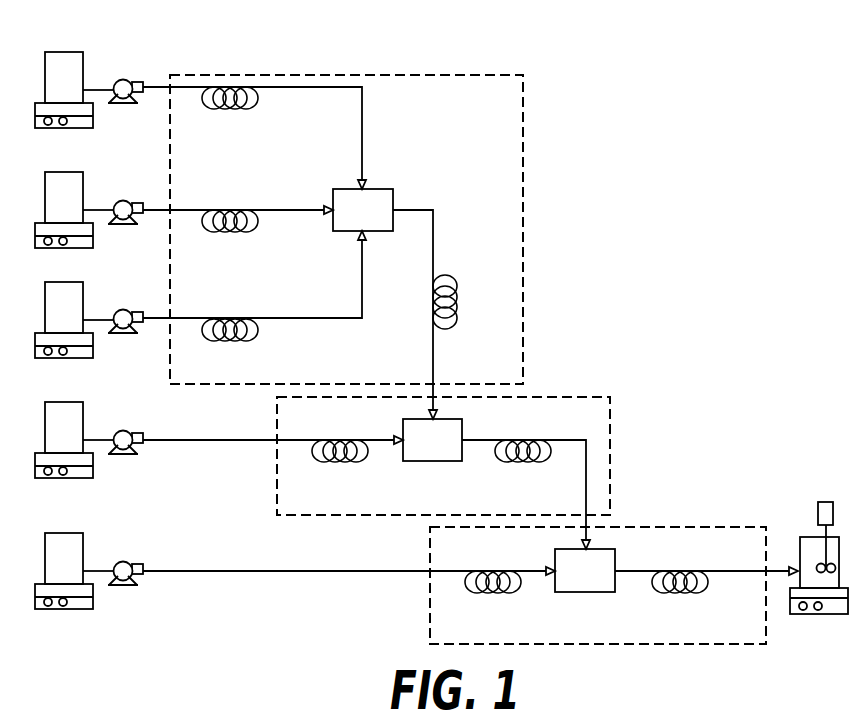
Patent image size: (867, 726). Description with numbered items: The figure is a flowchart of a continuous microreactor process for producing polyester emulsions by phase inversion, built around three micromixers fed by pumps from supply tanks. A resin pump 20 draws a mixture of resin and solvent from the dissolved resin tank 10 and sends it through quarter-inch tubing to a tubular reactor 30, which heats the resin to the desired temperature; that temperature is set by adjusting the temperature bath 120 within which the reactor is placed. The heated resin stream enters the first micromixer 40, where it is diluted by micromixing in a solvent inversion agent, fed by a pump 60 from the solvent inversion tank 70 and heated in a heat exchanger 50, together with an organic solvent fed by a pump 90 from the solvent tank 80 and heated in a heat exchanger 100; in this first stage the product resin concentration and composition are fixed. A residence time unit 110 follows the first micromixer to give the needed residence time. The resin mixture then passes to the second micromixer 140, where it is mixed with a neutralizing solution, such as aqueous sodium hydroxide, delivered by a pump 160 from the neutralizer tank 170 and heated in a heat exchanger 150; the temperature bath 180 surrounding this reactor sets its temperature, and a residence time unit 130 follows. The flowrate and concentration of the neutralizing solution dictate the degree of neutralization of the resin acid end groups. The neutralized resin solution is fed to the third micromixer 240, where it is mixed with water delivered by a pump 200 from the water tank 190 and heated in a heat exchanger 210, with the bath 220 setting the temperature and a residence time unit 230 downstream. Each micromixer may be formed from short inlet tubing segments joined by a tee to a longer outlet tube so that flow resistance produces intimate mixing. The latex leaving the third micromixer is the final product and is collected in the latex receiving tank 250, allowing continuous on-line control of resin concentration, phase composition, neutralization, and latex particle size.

The dissolved resin tank 10 is at (63, 50).
The resin pump 20 is at (123, 80).
The tubular reactor 30 is at (226, 86).
The first micromixer 40 is at (348, 232).
The heat exchanger 50 is at (228, 210).
The pump 60 is at (123, 201).
The solvent inversion tank 70 is at (63, 173).
The solvent tank 80 is at (63, 282).
The pump 90 is at (123, 310).
The heat exchanger 100 is at (225, 318).
The residence time unit 110 is at (456, 297).
The temperature bath 120 is at (397, 75).
The residence time unit 130 is at (518, 438).
The second micromixer 140 is at (433, 462).
The heat exchanger 150 is at (336, 438).
The pump 160 is at (123, 431).
The neutralizer tank 170 is at (63, 403).
The temperature bath 180 is at (573, 397).
The water tank 190 is at (63, 534).
The pump 200 is at (122, 562).
The heat exchanger 210 is at (488, 570).
The bath 220 is at (580, 593).
The residence time unit 230 is at (675, 570).
The third micromixer 240 is at (678, 527).
The latex receiving tank 250 is at (810, 537).